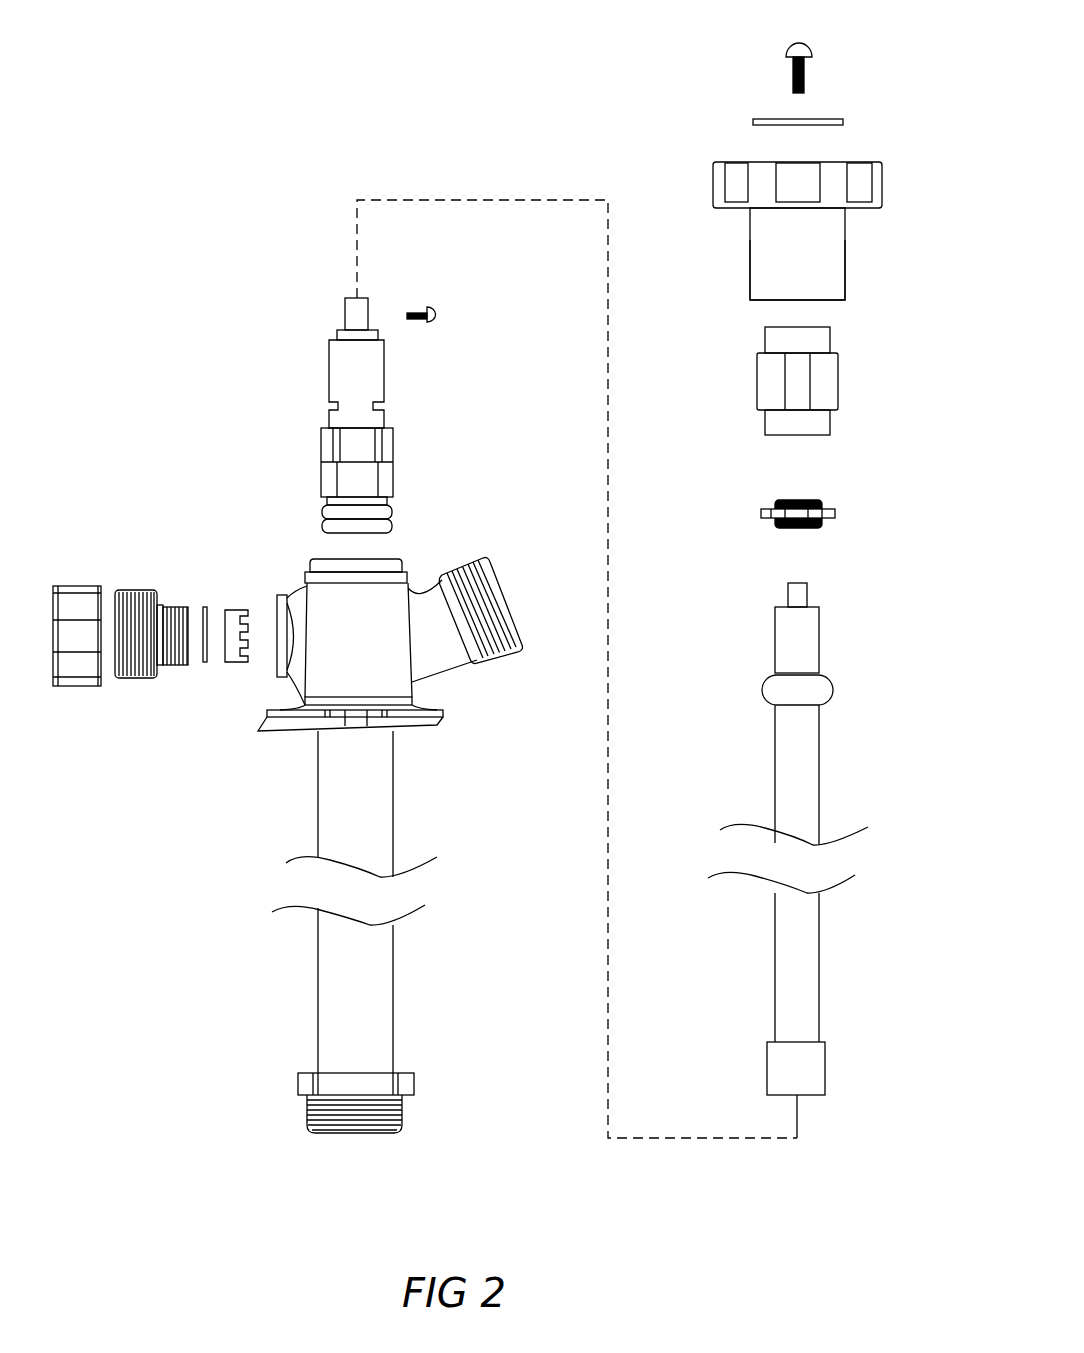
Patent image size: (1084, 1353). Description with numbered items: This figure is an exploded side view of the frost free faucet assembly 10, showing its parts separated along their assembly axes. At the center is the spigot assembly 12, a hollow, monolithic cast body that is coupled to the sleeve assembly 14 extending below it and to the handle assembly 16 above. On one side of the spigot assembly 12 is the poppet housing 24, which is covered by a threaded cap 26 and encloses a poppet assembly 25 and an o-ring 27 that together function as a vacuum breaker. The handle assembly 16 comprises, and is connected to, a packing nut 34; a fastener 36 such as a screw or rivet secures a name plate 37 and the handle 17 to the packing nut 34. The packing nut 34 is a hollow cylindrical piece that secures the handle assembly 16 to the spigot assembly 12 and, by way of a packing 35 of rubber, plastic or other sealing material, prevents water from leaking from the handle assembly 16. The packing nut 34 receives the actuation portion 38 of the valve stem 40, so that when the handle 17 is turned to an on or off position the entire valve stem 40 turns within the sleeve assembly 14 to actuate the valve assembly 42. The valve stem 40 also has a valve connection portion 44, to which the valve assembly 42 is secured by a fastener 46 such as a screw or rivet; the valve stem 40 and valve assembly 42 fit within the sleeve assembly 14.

The frost free faucet assembly 10 is at (187, 147).
The spigot assembly 12 is at (500, 575).
The sleeve assembly 14 is at (393, 825).
The handle assembly 16 is at (845, 263).
The handle 17 is at (762, 245).
The poppet housing 24 is at (142, 680).
The poppet assembly 25 is at (227, 610).
The threaded cap 26 is at (76, 683).
The o-ring 27 is at (205, 663).
The packing nut 34 is at (832, 385).
The packing 35 is at (817, 502).
The fastener 36 is at (808, 52).
The name plate 37 is at (843, 120).
The actuation portion 38 is at (822, 647).
The valve stem 40 is at (820, 788).
The valve assembly 42 is at (328, 370).
The valve connection portion 44 is at (825, 1073).
The fastener 46 is at (437, 315).